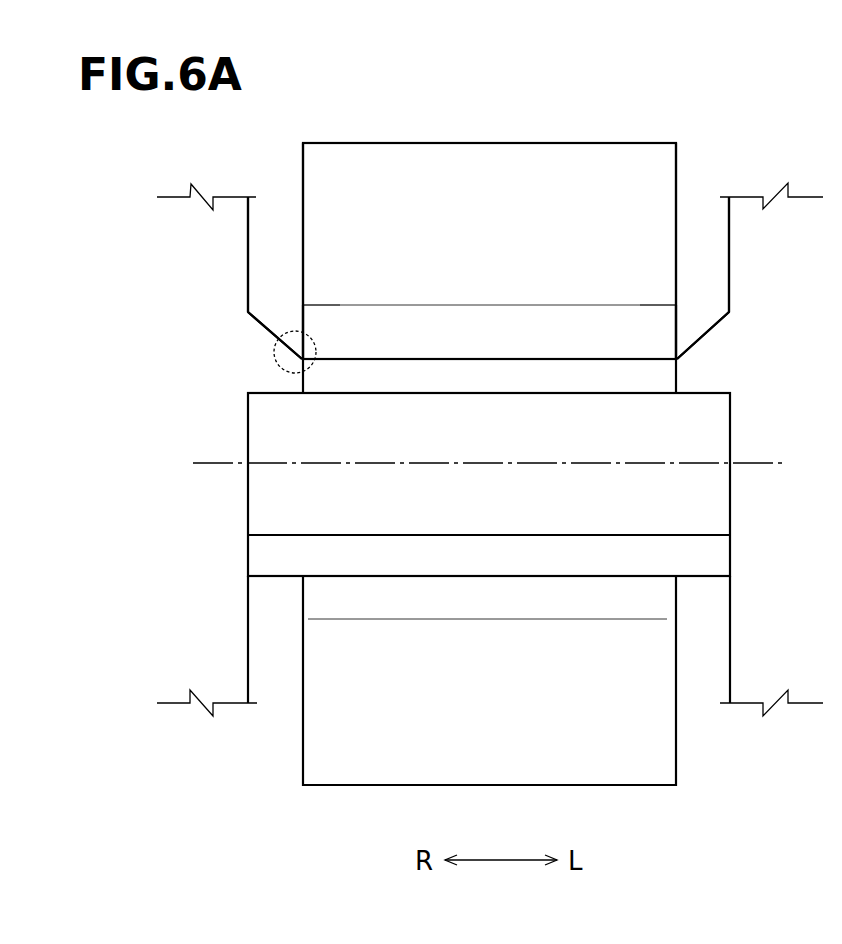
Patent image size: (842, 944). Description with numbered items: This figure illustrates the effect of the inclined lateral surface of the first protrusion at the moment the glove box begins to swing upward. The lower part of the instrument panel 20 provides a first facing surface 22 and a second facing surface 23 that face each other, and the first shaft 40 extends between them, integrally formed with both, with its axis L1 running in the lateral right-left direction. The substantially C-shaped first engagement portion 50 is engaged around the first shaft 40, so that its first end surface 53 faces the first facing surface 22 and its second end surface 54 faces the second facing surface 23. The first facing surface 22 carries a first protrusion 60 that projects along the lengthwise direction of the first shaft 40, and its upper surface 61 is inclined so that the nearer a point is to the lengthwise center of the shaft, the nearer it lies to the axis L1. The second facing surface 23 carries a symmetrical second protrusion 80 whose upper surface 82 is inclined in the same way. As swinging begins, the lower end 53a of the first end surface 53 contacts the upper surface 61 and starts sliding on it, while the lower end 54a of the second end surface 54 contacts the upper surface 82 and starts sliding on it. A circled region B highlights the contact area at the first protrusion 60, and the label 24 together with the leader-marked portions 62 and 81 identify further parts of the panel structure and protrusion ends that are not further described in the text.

The instrument panel 20 is at (202, 643).
The first facing surface 22 is at (248, 246).
The second facing surface 23 is at (718, 250).
The frame 24 is at (358, 105).
The first shaft 40 is at (297, 495).
The first engagement portion 50 is at (477, 192).
The first end surface 53 is at (298, 185).
The lower end of the first end surface 53a is at (313, 343).
The second end surface 54 is at (678, 188).
The lower end of the second end surface 54a is at (675, 358).
The first protrusion 60 is at (267, 377).
The upper surface 61 is at (267, 320).
The left contact portion 62 is at (307, 375).
The second protrusion 80 is at (697, 373).
The right contact portion 81 is at (675, 380).
The upper surface 82 is at (707, 330).
The detail region B is at (275, 352).
The axis L1 is at (763, 465).